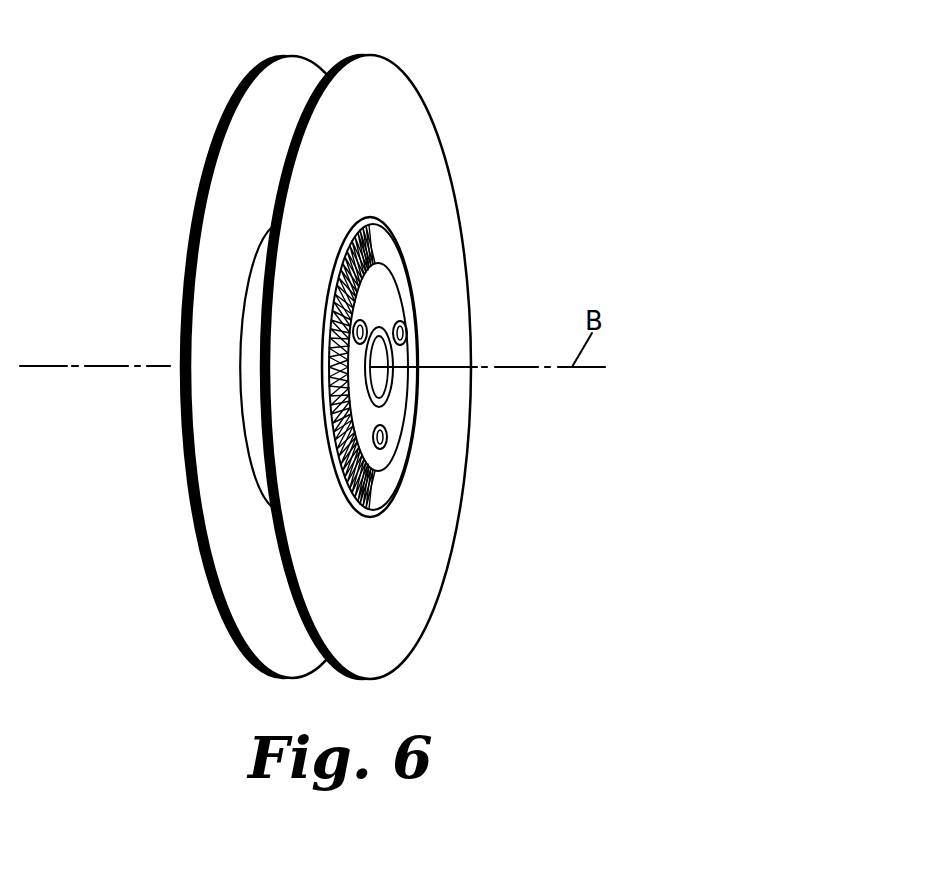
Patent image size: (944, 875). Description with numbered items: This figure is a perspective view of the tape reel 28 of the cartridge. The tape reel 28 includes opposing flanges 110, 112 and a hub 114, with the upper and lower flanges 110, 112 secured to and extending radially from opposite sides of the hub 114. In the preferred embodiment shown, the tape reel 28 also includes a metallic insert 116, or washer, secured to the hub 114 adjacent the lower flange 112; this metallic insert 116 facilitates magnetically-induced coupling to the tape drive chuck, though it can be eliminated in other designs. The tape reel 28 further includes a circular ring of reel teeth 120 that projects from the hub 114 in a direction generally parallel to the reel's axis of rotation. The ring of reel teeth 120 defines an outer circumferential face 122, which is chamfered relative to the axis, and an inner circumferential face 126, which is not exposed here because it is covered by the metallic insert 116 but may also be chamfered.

The tape reel 28 is at (500, 118).
The upper flange 110 is at (202, 293).
The lower flange 112 is at (398, 80).
The hub 114 is at (252, 408).
The metallic insert 116 is at (400, 405).
The ring of reel teeth 120 is at (398, 496).
The outer circumferential face 122 is at (375, 522).
The inner circumferential face 126 is at (355, 290).